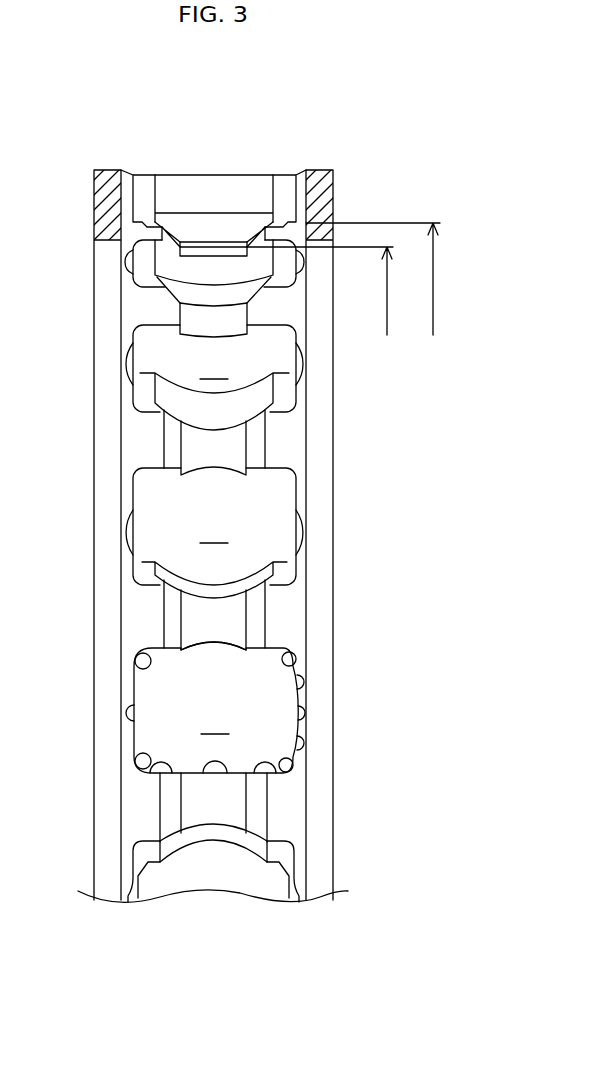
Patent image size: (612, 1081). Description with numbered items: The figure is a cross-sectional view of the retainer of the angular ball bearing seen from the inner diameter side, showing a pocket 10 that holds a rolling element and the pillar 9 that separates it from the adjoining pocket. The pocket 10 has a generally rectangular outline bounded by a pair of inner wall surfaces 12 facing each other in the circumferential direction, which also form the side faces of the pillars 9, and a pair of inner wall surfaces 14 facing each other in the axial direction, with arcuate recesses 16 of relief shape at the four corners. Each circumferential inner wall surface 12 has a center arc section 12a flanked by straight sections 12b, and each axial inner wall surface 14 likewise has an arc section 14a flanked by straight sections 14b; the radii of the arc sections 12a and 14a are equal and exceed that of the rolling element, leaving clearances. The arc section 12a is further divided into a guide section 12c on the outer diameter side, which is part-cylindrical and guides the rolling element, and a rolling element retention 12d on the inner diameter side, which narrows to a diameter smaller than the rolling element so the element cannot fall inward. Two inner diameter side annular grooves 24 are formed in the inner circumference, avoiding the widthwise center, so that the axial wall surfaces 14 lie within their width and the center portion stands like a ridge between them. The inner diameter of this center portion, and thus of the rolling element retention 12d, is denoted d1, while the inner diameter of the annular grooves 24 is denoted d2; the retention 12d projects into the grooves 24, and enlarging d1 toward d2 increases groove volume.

The pillar 9 is at (203, 320).
The pocket 10 is at (214, 488).
The inner wall surface 12 is at (263, 181).
The arc section 12a is at (247, 117).
The straight section 12b is at (153, 772).
The guide section 12c is at (225, 190).
The rolling element retention 12d is at (203, 223).
The inner wall surface 14 is at (130, 190).
The arc section 14a is at (303, 724).
The straight section 14b is at (303, 694).
The arcuate recess 16 is at (136, 672).
The inner diameter side annular groove 24 is at (140, 613).
The inner diameter of the center portion d1 is at (324, 304).
The inner diameter of the inner diameter side annular grooves d2 is at (377, 292).